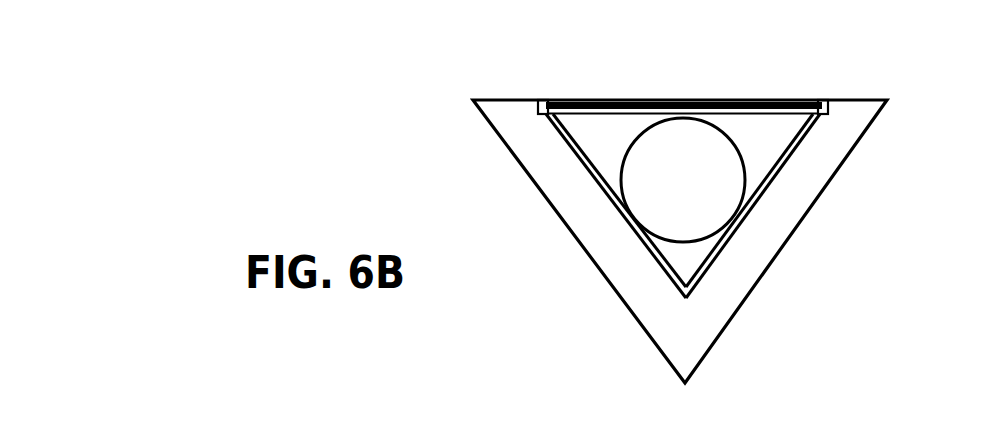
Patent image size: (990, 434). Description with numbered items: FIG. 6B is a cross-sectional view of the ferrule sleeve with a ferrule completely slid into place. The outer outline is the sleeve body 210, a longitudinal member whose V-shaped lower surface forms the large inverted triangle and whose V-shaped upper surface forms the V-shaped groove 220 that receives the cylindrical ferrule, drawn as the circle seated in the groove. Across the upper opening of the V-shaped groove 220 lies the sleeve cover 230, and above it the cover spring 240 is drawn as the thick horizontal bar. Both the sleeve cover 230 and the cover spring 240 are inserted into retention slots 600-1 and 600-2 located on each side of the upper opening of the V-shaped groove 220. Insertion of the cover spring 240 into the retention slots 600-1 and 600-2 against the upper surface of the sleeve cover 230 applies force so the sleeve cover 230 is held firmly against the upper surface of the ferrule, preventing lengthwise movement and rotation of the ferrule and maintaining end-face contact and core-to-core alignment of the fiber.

The sleeve body 210 is at (600, 289).
The V-shaped groove 220 is at (772, 146).
The sleeve cover 230 is at (590, 132).
The cover spring 240 is at (680, 88).
The retention slot 600-1 is at (522, 123).
The retention slot 600-2 is at (847, 127).